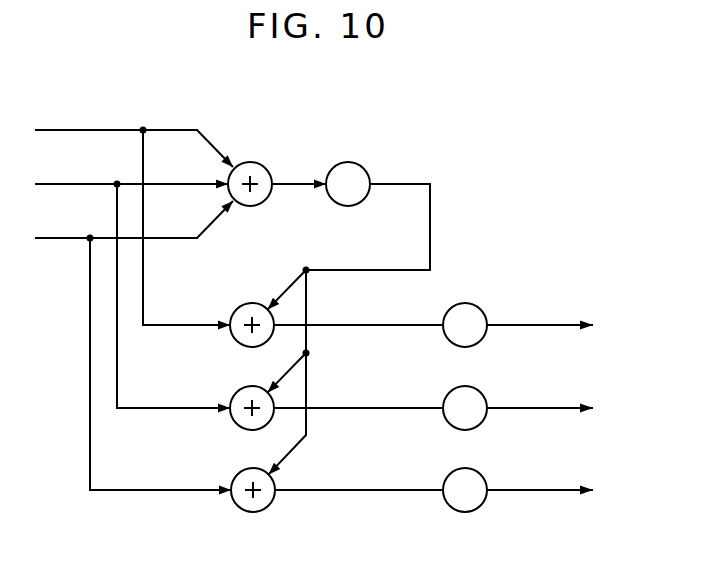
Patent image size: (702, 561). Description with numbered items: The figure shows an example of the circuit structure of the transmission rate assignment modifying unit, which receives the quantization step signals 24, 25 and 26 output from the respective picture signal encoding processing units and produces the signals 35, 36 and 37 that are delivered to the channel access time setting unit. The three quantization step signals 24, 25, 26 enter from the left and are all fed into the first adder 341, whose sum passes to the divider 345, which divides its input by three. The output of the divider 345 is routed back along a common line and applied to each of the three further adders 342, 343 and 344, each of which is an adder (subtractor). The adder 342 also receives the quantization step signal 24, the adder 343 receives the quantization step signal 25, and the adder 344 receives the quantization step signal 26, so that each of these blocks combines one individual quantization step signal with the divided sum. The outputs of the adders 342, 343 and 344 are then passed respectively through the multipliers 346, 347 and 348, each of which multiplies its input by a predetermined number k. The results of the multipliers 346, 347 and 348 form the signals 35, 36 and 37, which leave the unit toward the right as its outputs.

The quantization step signal 24 is at (78, 128).
The quantization step signal 25 is at (78, 182).
The quantization step signal 26 is at (78, 236).
The adder 341 is at (253, 161).
The adder 342 is at (237, 306).
The adder 343 is at (237, 390).
The adder 344 is at (238, 472).
The divider 345 is at (349, 161).
The multiplier 346 is at (448, 342).
The multiplier 347 is at (448, 425).
The multiplier 348 is at (448, 507).
The output signal 35 is at (541, 323).
The output signal 36 is at (541, 406).
The output signal 37 is at (541, 488).